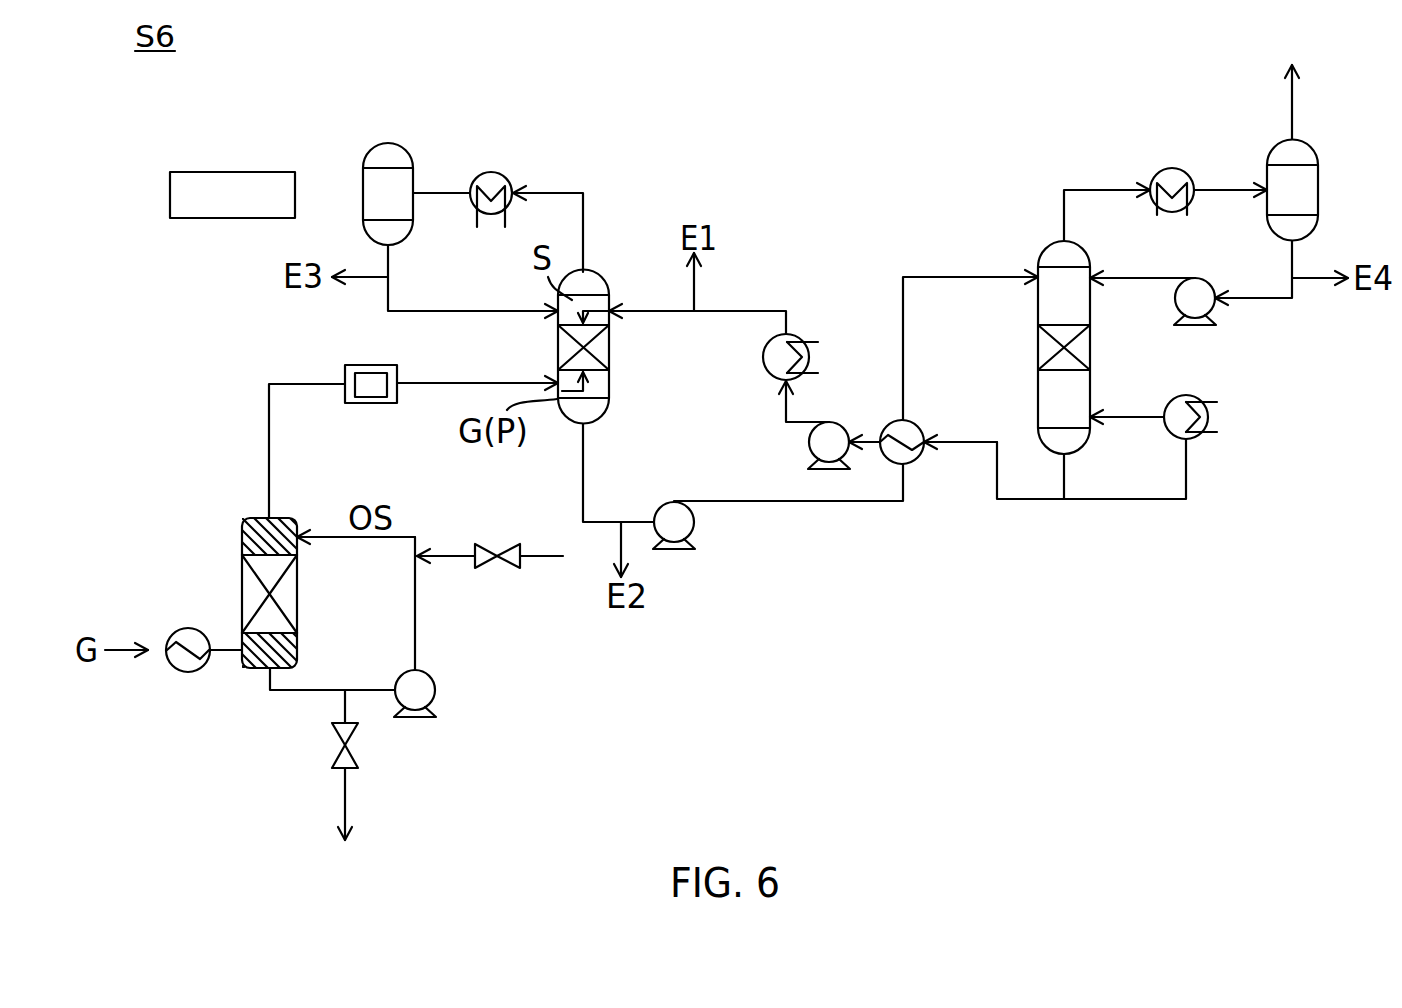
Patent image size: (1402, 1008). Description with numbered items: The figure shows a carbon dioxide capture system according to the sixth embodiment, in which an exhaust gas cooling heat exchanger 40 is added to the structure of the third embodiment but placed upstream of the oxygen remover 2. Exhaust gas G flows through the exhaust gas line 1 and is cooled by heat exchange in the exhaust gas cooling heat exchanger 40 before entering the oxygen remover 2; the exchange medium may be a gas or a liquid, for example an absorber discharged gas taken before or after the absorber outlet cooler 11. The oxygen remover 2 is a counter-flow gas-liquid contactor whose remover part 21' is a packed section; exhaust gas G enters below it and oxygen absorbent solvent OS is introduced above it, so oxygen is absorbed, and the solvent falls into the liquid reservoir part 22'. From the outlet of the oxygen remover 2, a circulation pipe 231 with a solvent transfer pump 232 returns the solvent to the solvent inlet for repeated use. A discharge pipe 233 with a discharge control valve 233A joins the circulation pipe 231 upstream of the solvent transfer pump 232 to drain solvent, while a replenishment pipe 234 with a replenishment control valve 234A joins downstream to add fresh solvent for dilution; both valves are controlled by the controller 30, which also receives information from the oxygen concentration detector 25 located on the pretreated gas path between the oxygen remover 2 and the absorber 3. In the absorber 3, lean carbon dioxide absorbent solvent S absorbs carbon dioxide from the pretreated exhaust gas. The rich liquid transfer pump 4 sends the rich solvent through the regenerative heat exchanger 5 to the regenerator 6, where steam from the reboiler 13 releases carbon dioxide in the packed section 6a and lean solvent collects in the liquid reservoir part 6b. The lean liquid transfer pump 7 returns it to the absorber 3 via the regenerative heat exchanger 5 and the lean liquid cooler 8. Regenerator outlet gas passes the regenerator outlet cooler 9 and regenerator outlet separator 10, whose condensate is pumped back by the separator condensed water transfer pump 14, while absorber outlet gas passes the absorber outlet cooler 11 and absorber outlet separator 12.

The exhaust gas line 1 is at (225, 655).
The oxygen remover 2 is at (254, 559).
The absorber 3 is at (556, 340).
The rich liquid transfer pump 4 is at (660, 507).
The regenerative heat exchanger 5 is at (917, 459).
The regenerator 6 is at (1022, 307).
The packed section 6a is at (1038, 350).
The liquid reservoir part 6b is at (1038, 440).
The lean liquid transfer pump 7 is at (809, 442).
The lean liquid cooler 8 is at (795, 336).
The regenerator outlet cooler 9 is at (1177, 170).
The regenerator outlet separator 10 is at (1318, 190).
The absorber outlet cooler 11 is at (497, 174).
The absorber outlet separator 12 is at (378, 144).
The reboiler 13 is at (1193, 398).
The separator condensed water transfer pump 14 is at (1180, 313).
The remover part 21' is at (228, 594).
The liquid reservoir part 22' is at (277, 631).
The oxygen concentration detector 25 is at (360, 366).
The controller 30 is at (232, 172).
The exhaust gas cooling heat exchanger 40 is at (187, 673).
The circulation pipe 231 is at (280, 692).
The solvent transfer pump 232 is at (433, 679).
The discharge pipe 233 is at (345, 795).
The discharge control valve 233A is at (350, 748).
The replenishment pipe 234 is at (450, 555).
The replenishment control valve 234A is at (487, 566).